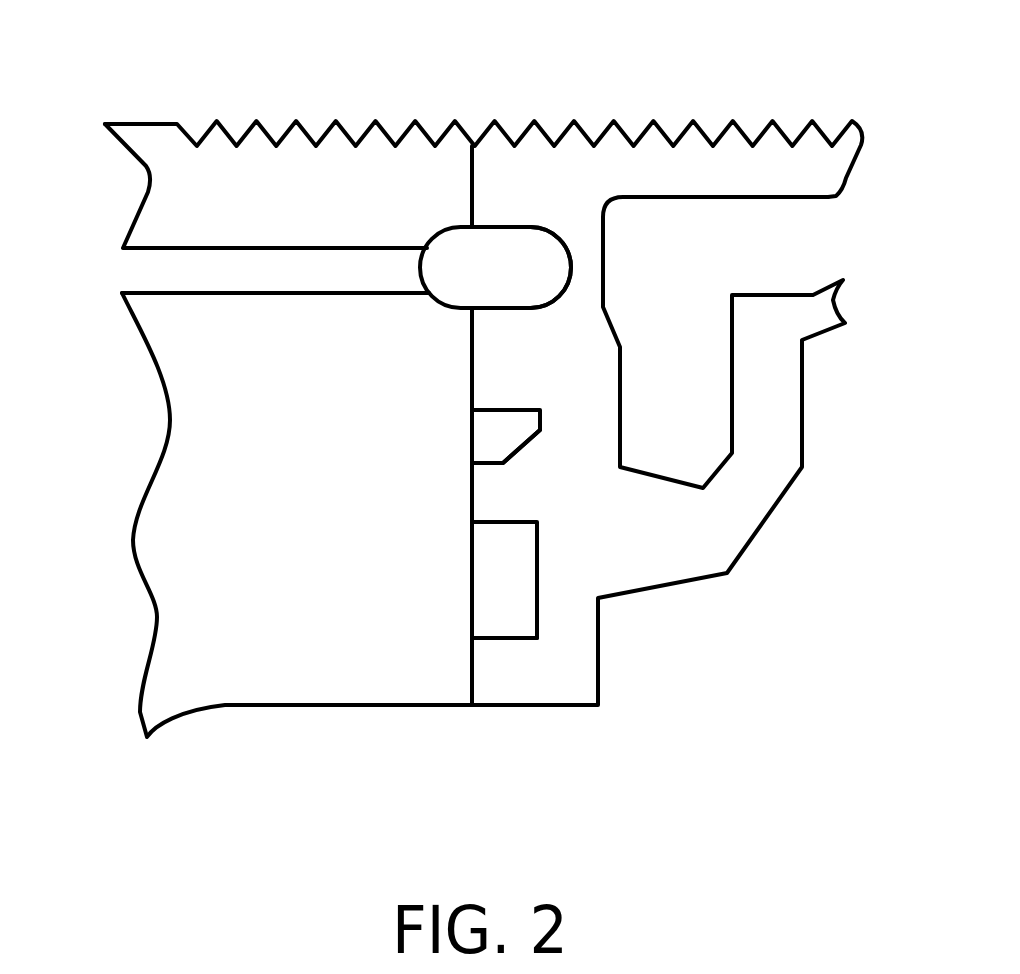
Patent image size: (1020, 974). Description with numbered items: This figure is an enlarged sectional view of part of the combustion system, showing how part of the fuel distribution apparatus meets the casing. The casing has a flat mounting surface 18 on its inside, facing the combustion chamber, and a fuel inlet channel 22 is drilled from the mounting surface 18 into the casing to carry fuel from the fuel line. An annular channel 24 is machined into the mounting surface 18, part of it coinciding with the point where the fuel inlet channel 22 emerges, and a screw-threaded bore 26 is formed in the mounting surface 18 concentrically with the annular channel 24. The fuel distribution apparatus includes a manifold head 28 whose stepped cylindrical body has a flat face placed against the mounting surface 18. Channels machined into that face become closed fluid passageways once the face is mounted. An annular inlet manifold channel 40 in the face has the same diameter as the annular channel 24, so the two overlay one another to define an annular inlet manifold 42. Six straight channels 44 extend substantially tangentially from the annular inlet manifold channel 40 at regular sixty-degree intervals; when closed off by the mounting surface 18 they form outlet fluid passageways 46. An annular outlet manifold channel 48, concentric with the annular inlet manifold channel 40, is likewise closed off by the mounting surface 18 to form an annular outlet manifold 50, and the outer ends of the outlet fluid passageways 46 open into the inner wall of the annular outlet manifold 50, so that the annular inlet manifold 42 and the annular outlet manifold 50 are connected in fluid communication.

The mounting surface 18 is at (472, 678).
The fuel inlet channel 22 is at (153, 292).
The annular channel 24 is at (450, 224).
The screw-threaded bore 26 is at (268, 133).
The manifold head 28 is at (780, 503).
The annular inlet manifold channel 40 is at (571, 278).
The annular inlet manifold 42 is at (512, 250).
The straight channels 44 is at (527, 446).
The outlet fluid passageways 46 is at (505, 428).
The annular outlet manifold channel 48 is at (538, 615).
The annular outlet manifold 50 is at (507, 610).